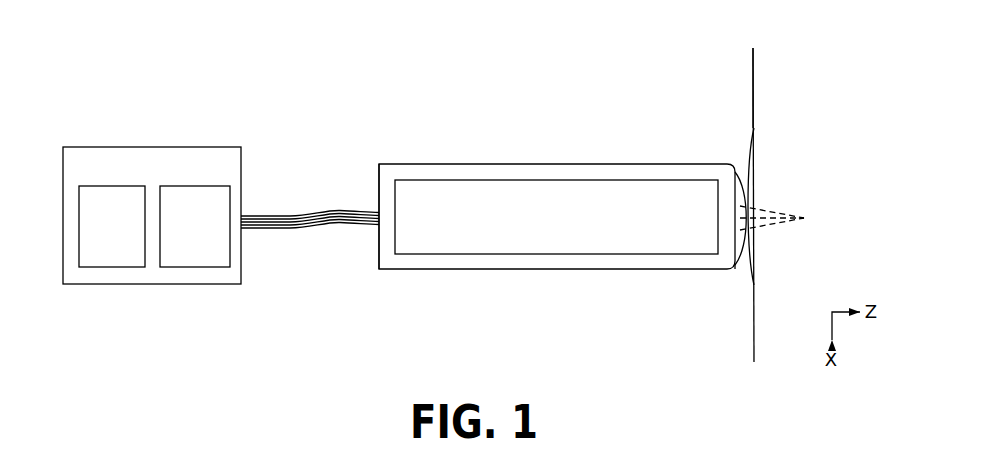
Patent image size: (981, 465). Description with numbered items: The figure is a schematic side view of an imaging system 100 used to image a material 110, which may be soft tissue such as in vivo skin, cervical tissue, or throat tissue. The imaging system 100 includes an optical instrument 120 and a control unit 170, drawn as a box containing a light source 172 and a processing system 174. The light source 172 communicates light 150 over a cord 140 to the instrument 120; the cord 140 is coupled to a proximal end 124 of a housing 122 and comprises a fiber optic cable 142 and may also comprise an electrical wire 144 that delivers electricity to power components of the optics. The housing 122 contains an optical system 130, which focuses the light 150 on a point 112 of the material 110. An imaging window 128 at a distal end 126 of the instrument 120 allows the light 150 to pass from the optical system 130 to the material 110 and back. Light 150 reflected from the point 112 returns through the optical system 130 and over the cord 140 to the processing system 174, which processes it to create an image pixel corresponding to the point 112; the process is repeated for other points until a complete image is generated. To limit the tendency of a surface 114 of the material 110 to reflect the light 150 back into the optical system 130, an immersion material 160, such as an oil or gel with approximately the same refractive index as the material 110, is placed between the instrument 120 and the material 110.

The imaging system 100 is at (120, 68).
The material 110 is at (780, 124).
The point 112 is at (808, 218).
The surface 114 is at (753, 126).
The optical instrument 120 is at (461, 102).
The housing 122 is at (576, 163).
The proximal end 124 is at (368, 285).
The distal end 126 is at (737, 282).
The imaging window 128 is at (738, 256).
The optical system 130 is at (539, 230).
The cord 140 is at (310, 216).
The fiber optic cable 142 is at (287, 226).
The electrical wire 144 is at (333, 211).
The light 150 is at (763, 229).
The immersion material 160 is at (750, 191).
The control unit 170 is at (135, 176).
The light source 172 is at (94, 237).
The processing system 174 is at (176, 237).